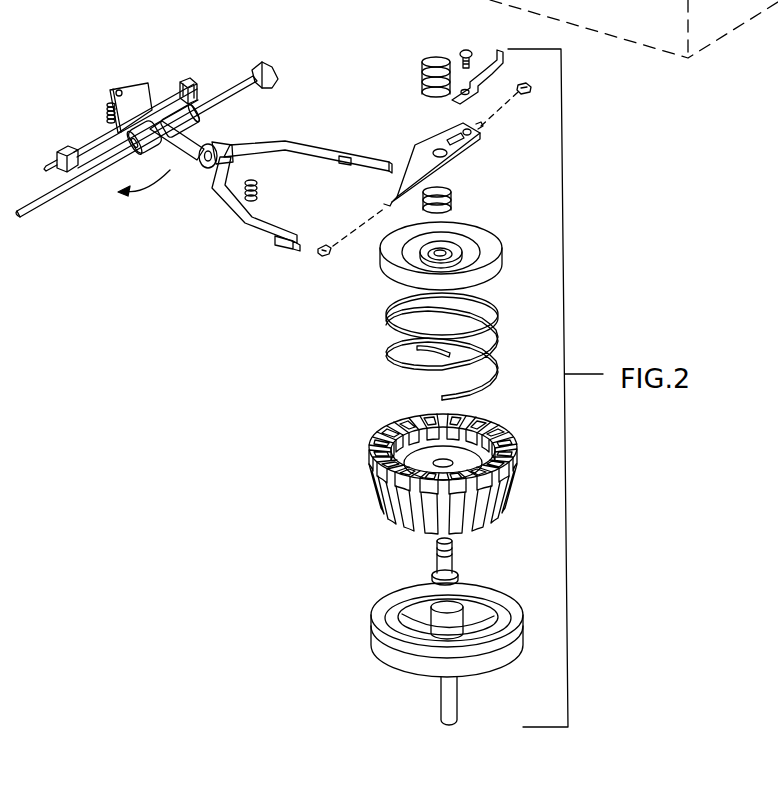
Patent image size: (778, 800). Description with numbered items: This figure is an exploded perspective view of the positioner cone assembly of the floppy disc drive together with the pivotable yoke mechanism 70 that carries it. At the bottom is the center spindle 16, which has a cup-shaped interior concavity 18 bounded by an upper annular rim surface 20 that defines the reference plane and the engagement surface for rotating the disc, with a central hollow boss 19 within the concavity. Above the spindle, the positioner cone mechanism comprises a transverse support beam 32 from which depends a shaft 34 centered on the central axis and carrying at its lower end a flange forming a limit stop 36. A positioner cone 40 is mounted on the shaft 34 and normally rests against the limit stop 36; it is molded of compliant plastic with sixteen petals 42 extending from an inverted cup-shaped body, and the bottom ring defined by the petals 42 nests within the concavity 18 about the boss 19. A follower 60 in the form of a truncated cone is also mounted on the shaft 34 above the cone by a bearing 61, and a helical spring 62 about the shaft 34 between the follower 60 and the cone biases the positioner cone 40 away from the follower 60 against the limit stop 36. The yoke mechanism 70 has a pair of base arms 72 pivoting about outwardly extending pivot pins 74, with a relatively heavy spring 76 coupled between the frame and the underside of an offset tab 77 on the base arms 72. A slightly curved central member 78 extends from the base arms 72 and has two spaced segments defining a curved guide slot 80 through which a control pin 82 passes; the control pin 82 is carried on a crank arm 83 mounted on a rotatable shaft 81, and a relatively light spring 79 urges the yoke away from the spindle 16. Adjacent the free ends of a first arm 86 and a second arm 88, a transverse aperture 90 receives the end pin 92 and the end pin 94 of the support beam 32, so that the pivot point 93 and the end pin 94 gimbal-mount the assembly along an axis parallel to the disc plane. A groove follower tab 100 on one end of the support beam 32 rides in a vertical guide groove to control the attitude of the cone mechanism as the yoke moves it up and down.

The center spindle 16 is at (387, 655).
The cup-shaped interior concavity 18 is at (477, 598).
The boss 19 is at (440, 605).
The upper annular rim surface 20 is at (505, 608).
The transverse support beam 32 is at (458, 155).
The shaft 34 is at (453, 556).
The limit stop 36 is at (435, 574).
The positioner cone 40 is at (485, 407).
The petals 42 is at (510, 430).
The follower 60 is at (468, 232).
The bearing 61 is at (448, 258).
The helical spring 62 is at (494, 308).
The yoke mechanism 70 is at (270, 129).
The base arms 72 is at (166, 101).
The pivot pins 74 is at (197, 84).
The spring 76 is at (107, 110).
The offset tab 77 is at (127, 86).
The central member 78 is at (196, 133).
The spring 79 is at (262, 188).
The guide slot 80 is at (204, 165).
The rotatable shaft 81 is at (45, 208).
The control pin 82 is at (208, 145).
The crank arm 83 is at (172, 152).
The first arm 86 is at (256, 230).
The second arm 88 is at (325, 150).
The transverse aperture 90 is at (287, 248).
The end pin 92 is at (348, 166).
The pivot point 93 is at (390, 198).
The end pin 94 is at (481, 127).
The groove follower tab 100 is at (497, 66).